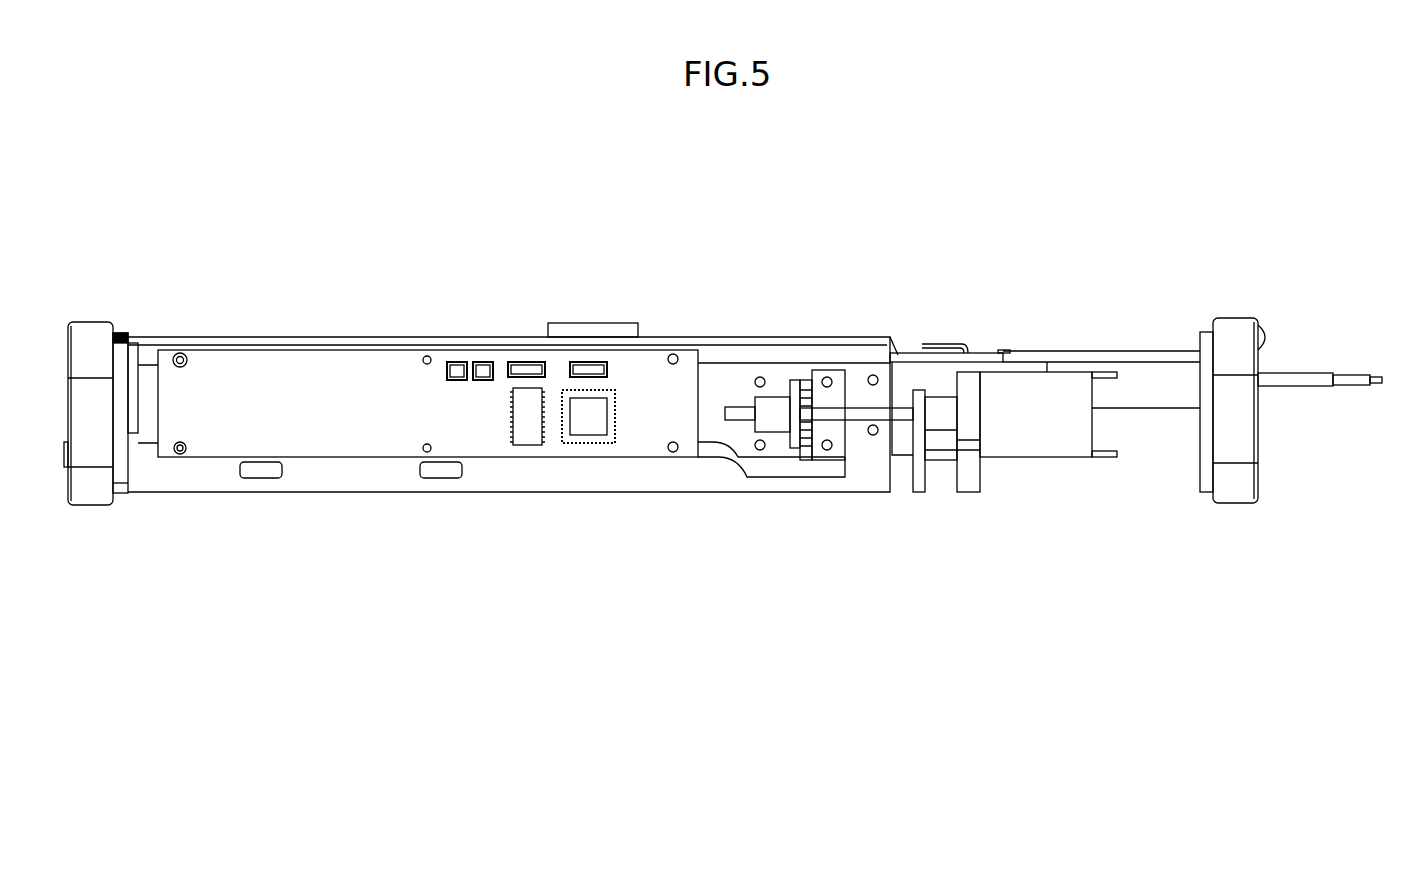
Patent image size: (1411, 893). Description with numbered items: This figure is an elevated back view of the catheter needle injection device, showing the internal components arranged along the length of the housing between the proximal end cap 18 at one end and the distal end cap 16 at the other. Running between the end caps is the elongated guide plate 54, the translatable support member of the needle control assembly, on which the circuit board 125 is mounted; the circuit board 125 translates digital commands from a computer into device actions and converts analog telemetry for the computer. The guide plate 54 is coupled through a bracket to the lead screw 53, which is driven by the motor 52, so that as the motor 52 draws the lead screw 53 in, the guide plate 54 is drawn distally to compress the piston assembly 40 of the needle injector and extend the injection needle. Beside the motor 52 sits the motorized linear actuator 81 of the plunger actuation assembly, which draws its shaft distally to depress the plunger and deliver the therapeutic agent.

The distal end cap 16 is at (1228, 342).
The proximal end cap 18 is at (88, 353).
The piston assembly 40 is at (1145, 380).
The motor 52 is at (1007, 428).
The lead screw 53 is at (727, 413).
The guide plate 54 is at (713, 382).
The motorized linear actuator 81 is at (905, 378).
The circuit board 125 is at (303, 388).